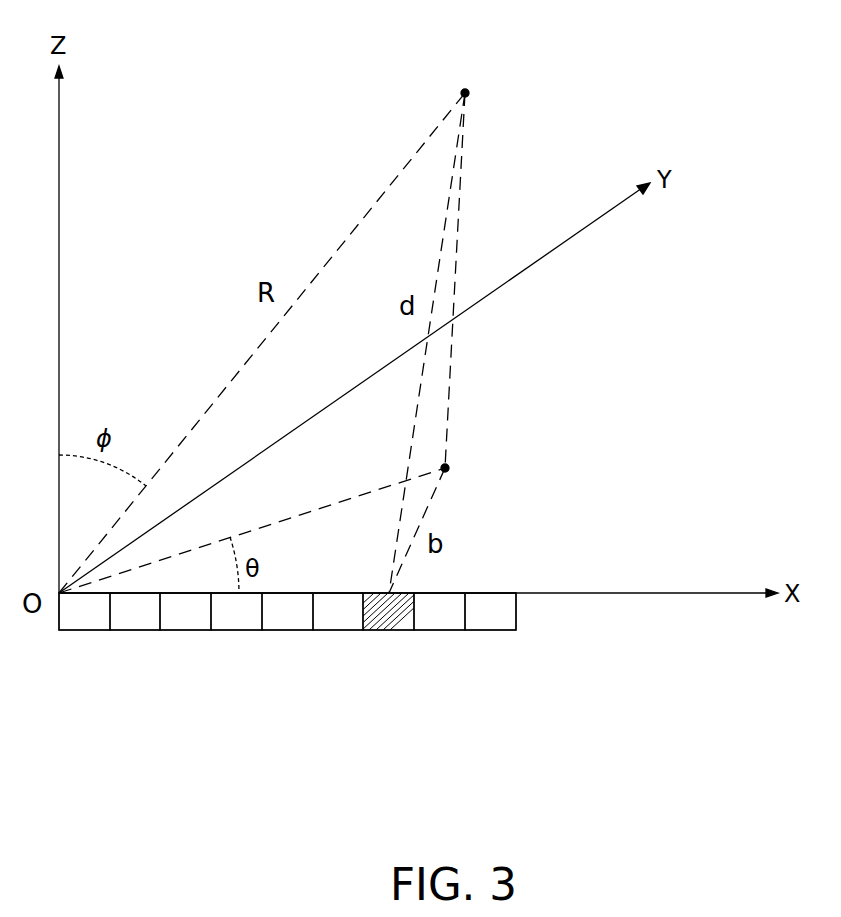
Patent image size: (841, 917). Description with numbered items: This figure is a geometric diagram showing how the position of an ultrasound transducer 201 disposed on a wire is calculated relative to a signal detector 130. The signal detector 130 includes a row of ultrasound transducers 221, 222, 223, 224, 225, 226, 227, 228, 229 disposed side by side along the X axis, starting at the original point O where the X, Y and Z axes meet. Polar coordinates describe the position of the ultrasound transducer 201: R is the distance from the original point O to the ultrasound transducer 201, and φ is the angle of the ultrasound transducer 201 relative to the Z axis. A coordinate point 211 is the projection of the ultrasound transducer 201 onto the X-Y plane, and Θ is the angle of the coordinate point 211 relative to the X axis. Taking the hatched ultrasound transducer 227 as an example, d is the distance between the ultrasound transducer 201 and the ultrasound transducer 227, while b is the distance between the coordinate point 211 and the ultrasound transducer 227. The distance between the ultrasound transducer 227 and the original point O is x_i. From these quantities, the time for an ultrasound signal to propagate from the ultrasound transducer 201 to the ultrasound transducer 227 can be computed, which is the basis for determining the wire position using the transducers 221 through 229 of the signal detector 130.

The ultrasound transducer 201 is at (469, 92).
The coordinate point 211 is at (449, 468).
The signal detector 130 is at (516, 770).
The ultrasound transducer 221 is at (88, 617).
The ultrasound transducer 222 is at (137, 617).
The ultrasound transducer 223 is at (185, 617).
The ultrasound transducer 224 is at (237, 617).
The ultrasound transducer 225 is at (288, 617).
The ultrasound transducer 226 is at (340, 617).
The ultrasound transducer 227 is at (391, 617).
The ultrasound transducer 228 is at (442, 617).
The ultrasound transducer 229 is at (493, 617).